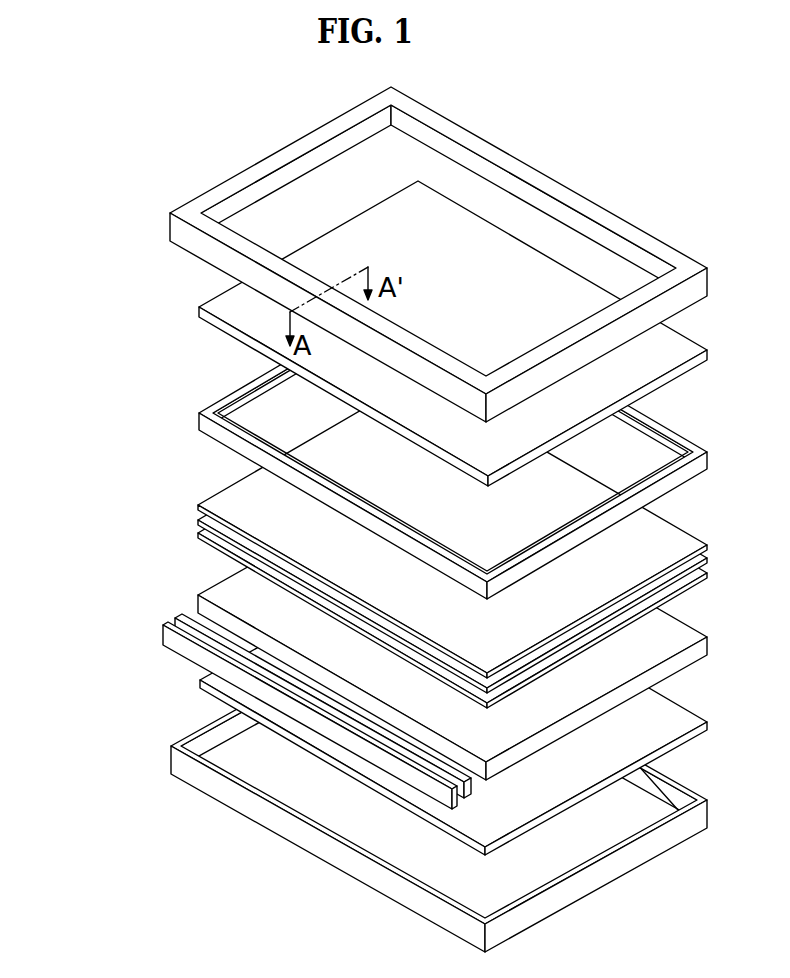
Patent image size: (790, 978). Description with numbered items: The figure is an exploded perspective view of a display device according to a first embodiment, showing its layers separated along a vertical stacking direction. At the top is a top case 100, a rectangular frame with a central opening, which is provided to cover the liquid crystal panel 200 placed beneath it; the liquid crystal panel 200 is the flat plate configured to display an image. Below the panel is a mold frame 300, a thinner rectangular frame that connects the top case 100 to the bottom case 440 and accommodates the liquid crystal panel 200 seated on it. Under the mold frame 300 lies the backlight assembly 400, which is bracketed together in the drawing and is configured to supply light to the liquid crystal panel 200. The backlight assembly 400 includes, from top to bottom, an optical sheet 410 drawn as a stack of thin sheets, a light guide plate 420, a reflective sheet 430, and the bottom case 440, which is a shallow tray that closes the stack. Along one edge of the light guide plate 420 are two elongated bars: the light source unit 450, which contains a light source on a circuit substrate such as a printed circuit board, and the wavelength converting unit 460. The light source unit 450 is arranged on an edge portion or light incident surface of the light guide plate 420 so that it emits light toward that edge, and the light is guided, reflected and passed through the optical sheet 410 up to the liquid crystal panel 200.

The top case 100 is at (180, 231).
The liquid crystal panel 200 is at (205, 312).
The mold frame 300 is at (205, 423).
The backlight assembly 400 is at (363, 664).
The optical sheet 410 is at (407, 542).
The light guide plate 420 is at (197, 600).
The reflective sheet 430 is at (197, 690).
The bottom case 440 is at (180, 763).
The light source unit 450 is at (187, 649).
The wavelength converting unit 460 is at (173, 618).